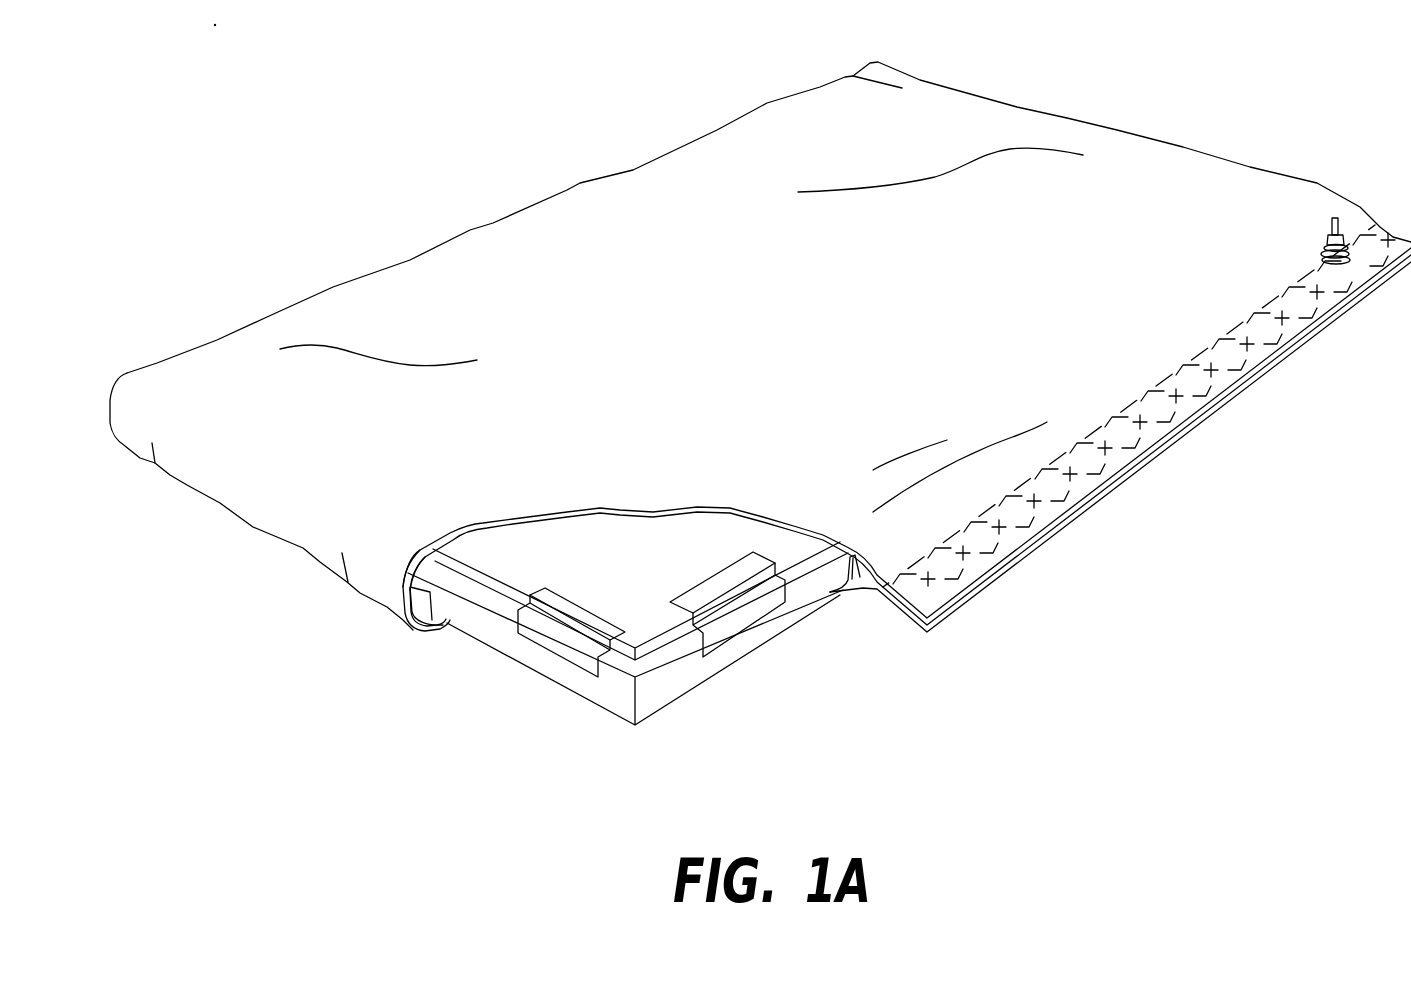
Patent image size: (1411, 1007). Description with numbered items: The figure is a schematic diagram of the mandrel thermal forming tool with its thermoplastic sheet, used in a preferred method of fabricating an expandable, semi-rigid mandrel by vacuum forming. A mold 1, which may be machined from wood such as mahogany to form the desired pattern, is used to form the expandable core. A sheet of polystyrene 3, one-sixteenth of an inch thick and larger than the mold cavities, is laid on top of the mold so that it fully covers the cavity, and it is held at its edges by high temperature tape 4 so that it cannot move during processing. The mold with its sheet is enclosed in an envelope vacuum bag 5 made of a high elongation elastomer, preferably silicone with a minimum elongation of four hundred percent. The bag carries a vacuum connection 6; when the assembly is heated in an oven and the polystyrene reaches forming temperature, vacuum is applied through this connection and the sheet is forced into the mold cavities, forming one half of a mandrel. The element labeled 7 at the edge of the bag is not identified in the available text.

The mold 1 is at (692, 673).
The polystyrene sheet 3 is at (620, 607).
The tape 4 is at (740, 619).
The envelope vacuum bag 5 is at (1003, 530).
The vacuum connection 6 is at (1345, 262).
The cover hem edge 7 is at (418, 603).